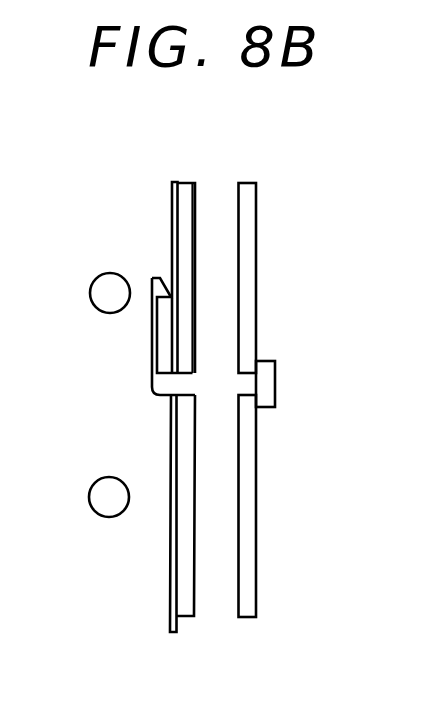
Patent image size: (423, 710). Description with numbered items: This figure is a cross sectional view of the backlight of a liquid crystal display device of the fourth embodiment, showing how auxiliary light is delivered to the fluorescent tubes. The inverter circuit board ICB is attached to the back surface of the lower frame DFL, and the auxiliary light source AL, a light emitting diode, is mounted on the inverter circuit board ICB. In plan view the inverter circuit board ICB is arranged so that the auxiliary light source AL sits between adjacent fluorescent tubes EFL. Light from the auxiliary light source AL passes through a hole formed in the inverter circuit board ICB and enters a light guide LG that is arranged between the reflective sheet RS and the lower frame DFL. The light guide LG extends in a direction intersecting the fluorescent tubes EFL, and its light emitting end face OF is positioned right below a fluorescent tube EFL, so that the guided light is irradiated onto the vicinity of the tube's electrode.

The reflective sheet RS is at (171, 197).
The light emitting end face OF is at (152, 282).
The fluorescent tube EFL is at (90, 294).
The light guide LG is at (162, 322).
The auxiliary light source AL is at (275, 382).
The inverter circuit board ICB is at (255, 518).
The lower frame DFL is at (187, 562).